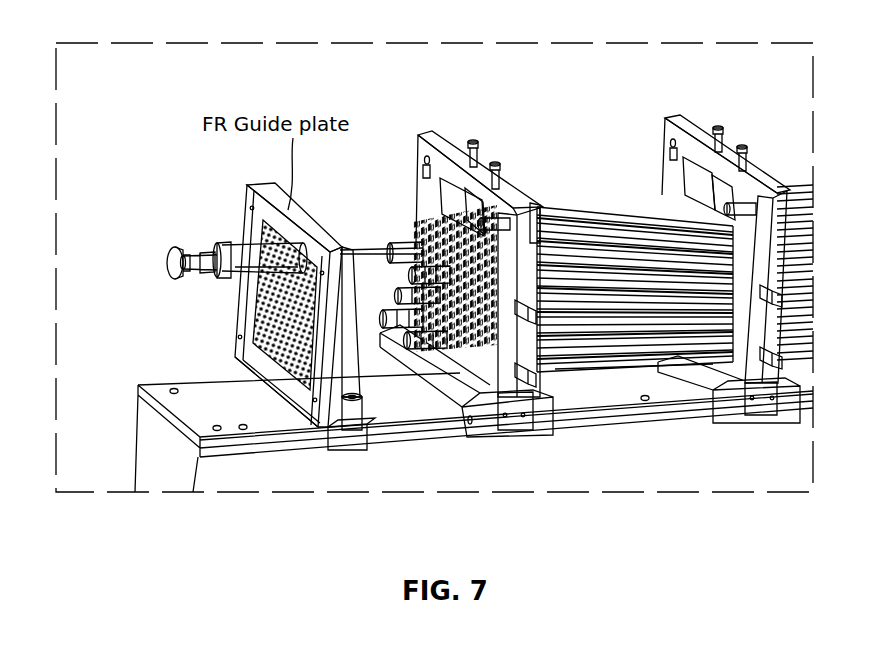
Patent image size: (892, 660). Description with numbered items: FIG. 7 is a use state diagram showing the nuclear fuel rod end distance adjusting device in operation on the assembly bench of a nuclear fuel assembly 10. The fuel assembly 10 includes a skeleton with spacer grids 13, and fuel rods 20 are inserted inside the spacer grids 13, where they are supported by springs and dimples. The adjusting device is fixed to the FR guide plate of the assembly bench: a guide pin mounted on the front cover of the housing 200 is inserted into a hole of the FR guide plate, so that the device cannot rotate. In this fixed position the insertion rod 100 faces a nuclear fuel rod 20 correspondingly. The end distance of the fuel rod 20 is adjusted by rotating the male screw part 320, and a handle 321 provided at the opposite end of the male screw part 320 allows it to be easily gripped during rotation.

The nuclear fuel assembly 10 is at (640, 420).
The spacer grid 13 is at (463, 147).
The fuel rod 20 is at (604, 205).
The insertion rod 100 is at (377, 243).
The housing 200 is at (243, 250).
The male screw part 320 is at (213, 262).
The handle 321 is at (168, 258).